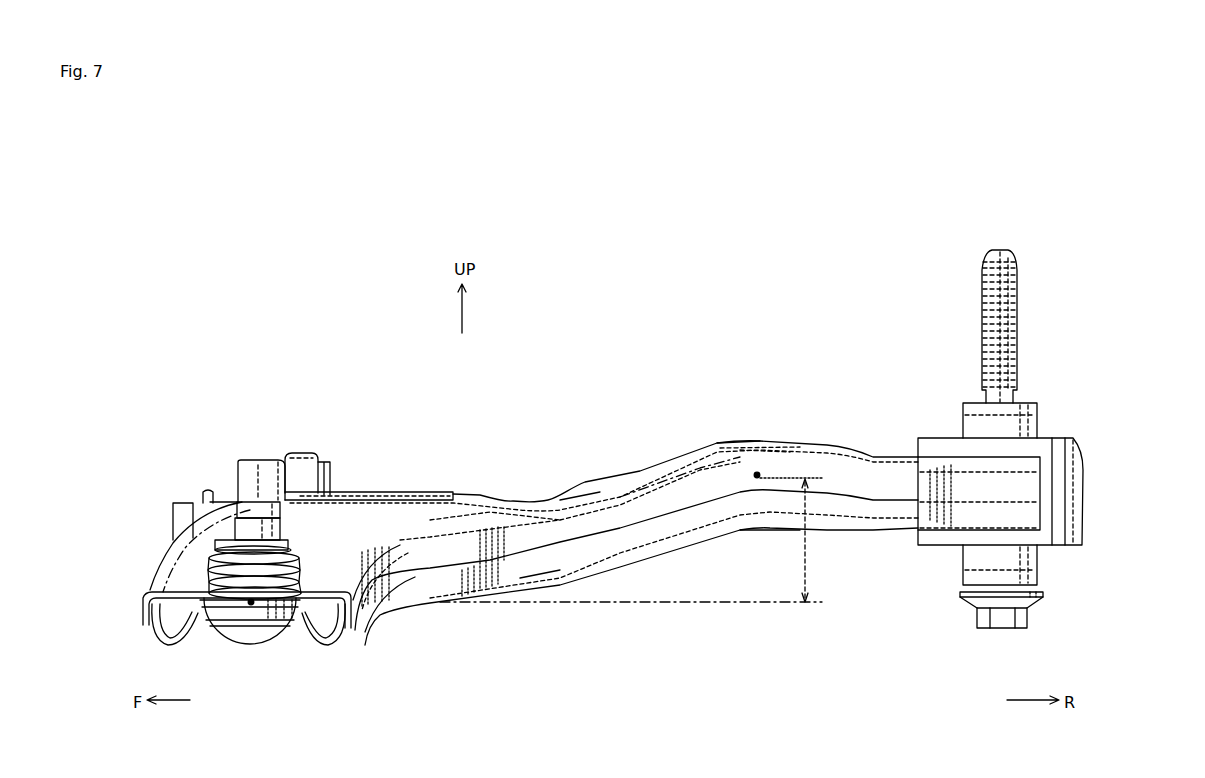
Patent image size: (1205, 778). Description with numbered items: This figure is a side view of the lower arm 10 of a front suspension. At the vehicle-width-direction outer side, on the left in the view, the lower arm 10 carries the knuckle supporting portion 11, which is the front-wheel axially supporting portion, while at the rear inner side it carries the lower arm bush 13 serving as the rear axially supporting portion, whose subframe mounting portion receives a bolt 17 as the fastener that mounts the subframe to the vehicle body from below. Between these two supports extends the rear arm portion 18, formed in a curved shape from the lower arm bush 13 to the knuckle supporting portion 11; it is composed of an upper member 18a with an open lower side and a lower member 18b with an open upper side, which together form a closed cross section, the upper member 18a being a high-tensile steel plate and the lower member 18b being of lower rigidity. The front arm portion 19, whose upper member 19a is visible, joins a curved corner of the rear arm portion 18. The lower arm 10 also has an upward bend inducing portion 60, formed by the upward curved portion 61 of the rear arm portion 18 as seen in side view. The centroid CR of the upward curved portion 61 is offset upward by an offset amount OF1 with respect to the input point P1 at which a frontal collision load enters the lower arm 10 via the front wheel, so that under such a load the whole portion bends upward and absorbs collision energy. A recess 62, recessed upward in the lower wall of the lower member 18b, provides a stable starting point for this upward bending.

The lower arm 10 is at (626, 441).
The knuckle supporting portion 11 is at (290, 530).
The lower arm bush 13 is at (1085, 493).
The bolt 17 is at (1020, 338).
The rear arm portion 18 is at (493, 484).
The upper member 18a is at (563, 524).
The lower member 18b is at (537, 574).
The front arm portion 19 is at (362, 481).
The upper member 19a is at (398, 484).
The upward bend inducing portion 60 is at (733, 434).
The upward curved portion 61 is at (757, 451).
The recess 62 is at (773, 537).
The centroid CR is at (755, 479).
The offset amount OF1 is at (808, 562).
The input point P1 is at (250, 604).